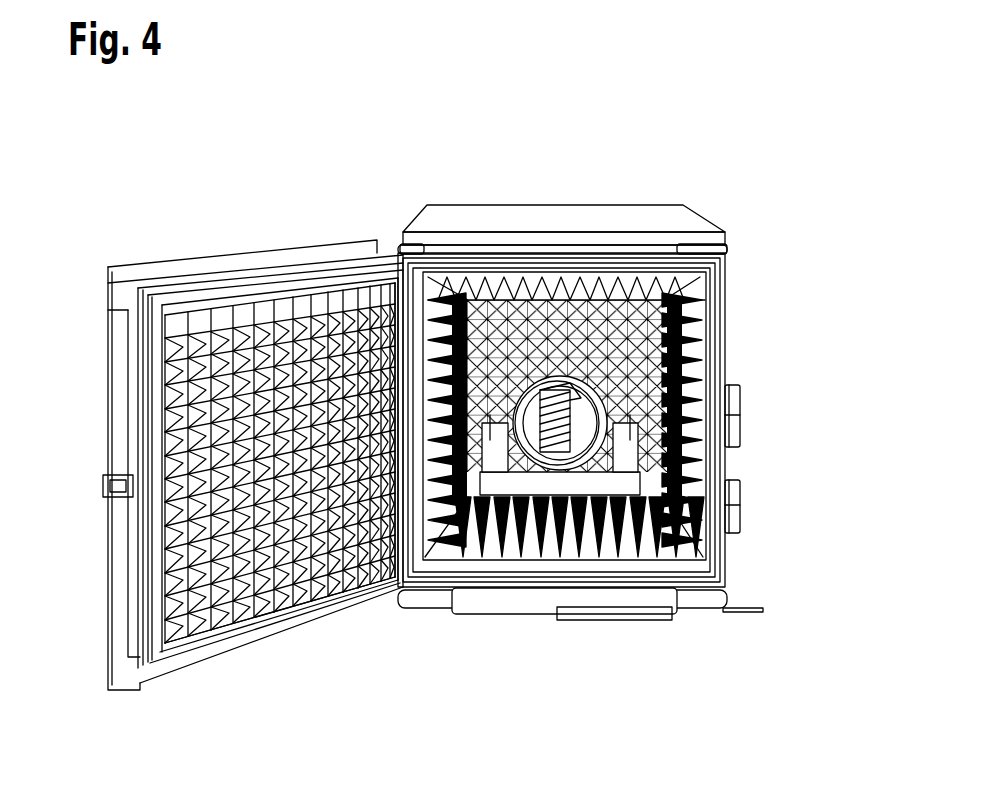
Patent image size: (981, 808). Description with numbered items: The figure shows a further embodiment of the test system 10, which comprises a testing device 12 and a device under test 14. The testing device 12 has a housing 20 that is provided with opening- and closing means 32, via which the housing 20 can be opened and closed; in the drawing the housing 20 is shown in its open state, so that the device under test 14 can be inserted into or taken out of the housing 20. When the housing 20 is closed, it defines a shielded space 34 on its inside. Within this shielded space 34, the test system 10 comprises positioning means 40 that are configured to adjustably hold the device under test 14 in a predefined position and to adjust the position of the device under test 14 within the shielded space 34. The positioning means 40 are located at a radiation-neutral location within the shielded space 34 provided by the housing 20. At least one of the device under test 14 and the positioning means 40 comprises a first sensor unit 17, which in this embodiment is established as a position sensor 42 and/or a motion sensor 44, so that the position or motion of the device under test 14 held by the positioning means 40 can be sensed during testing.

The test system 10 is at (348, 176).
The testing device 12 is at (686, 224).
The device under test 14 is at (577, 403).
The first sensor unit 17 is at (621, 478).
The housing 20 is at (538, 231).
The opening- and closing means 32 is at (263, 632).
The shielded space 34 is at (627, 292).
The positioning means 40 is at (583, 462).
The position sensor 42 is at (522, 478).
The motion sensor 44 is at (502, 479).